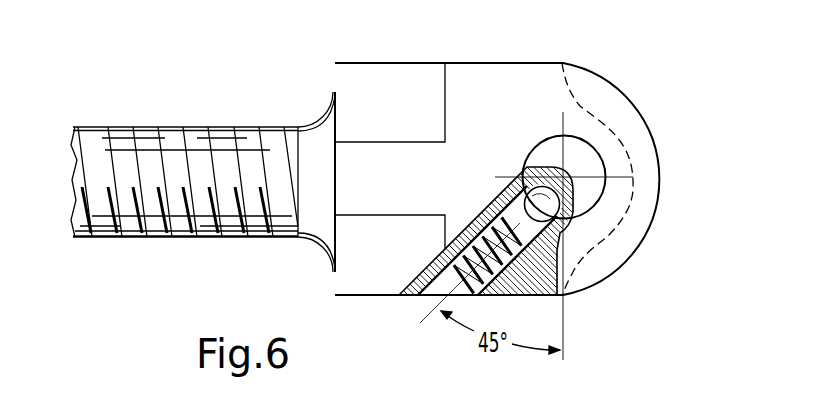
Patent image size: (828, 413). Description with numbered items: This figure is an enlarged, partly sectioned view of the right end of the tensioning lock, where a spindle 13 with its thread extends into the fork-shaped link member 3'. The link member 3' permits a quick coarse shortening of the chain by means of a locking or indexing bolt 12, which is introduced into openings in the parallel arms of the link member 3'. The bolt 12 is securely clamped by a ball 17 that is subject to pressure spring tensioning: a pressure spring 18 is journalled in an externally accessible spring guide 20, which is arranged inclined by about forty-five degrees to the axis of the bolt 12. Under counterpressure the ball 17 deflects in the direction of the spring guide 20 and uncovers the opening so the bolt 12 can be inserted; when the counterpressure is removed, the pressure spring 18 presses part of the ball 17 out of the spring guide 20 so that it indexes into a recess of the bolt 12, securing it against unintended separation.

The spindle 13 is at (161, 205).
The fork-shaped link member 3' is at (601, 166).
The locking or indexing bolt 12 is at (590, 158).
The ball 17 is at (567, 220).
The pressure spring 18 is at (537, 292).
The spring guide 20 is at (472, 286).